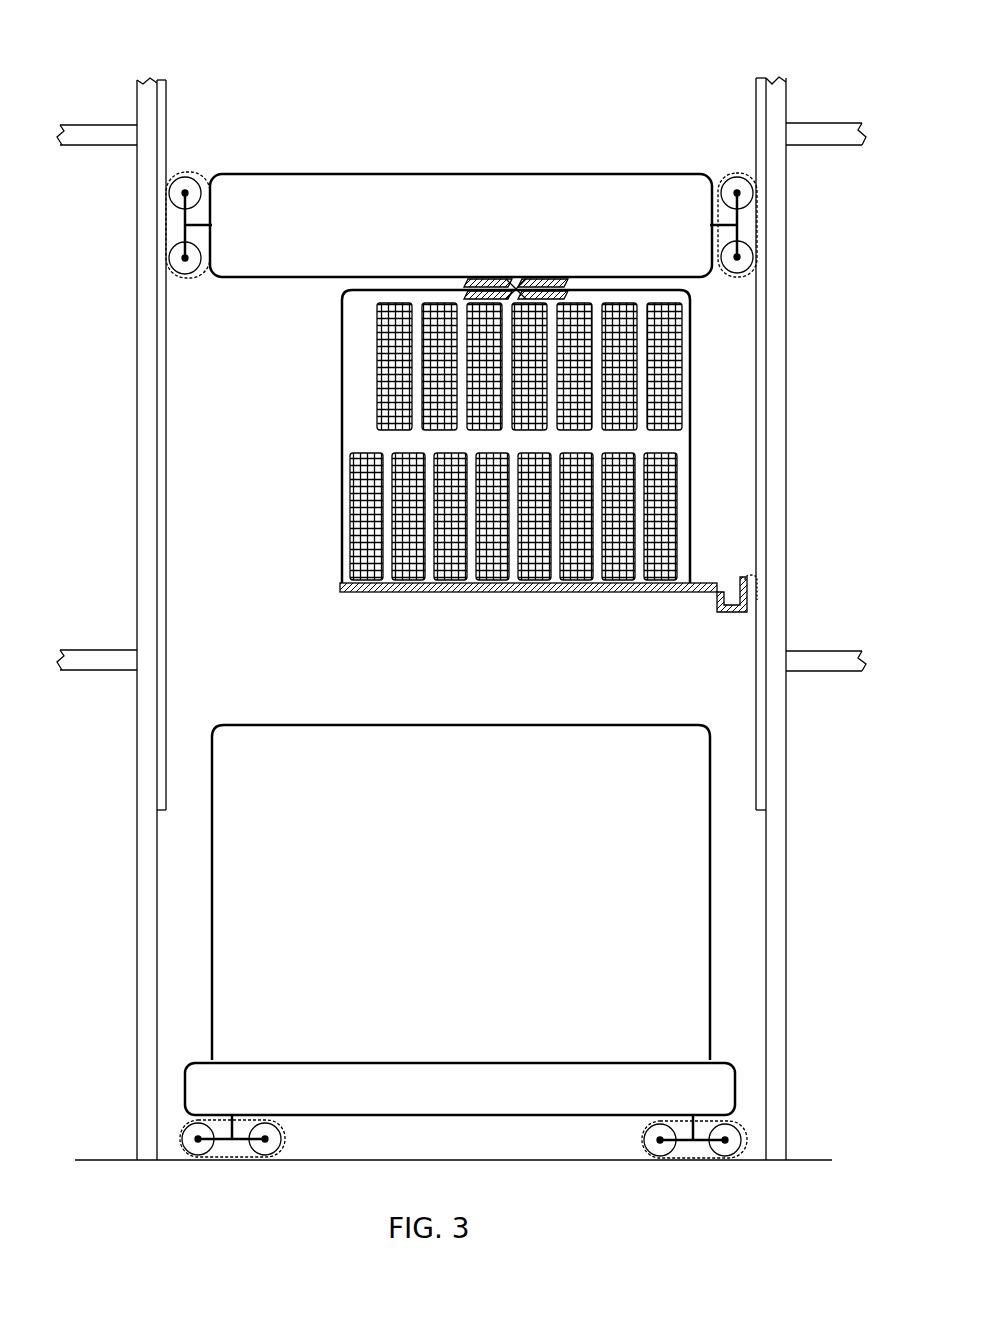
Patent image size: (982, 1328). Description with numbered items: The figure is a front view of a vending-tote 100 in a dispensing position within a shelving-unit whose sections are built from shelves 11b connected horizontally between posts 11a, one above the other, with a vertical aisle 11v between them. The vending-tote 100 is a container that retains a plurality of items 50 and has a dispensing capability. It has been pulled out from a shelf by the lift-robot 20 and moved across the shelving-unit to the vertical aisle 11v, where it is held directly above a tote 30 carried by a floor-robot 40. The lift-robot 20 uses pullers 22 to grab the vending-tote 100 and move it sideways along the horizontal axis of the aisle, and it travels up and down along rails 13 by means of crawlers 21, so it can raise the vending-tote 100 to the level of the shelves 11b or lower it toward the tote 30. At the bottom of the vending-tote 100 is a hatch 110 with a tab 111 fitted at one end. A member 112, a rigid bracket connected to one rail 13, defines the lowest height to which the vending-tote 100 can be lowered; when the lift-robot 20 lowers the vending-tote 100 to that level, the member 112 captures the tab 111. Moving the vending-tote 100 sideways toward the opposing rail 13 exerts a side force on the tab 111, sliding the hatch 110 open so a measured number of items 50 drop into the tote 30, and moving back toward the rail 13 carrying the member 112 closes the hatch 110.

The vertical aisle 11v is at (757, 78).
The posts 11a is at (122, 148).
The shelves 11b is at (137, 312).
The rails 13 is at (166, 128).
The lift-robot 20 is at (395, 174).
The crawlers 21 is at (190, 180).
The pullers 22 is at (500, 277).
The vending-tote 100 is at (465, 436).
The items 50 is at (362, 490).
The hatch 110 is at (497, 590).
The tab 111 is at (693, 600).
The member 112 is at (753, 597).
The tote 30 is at (458, 725).
The floor-robot 40 is at (738, 1063).